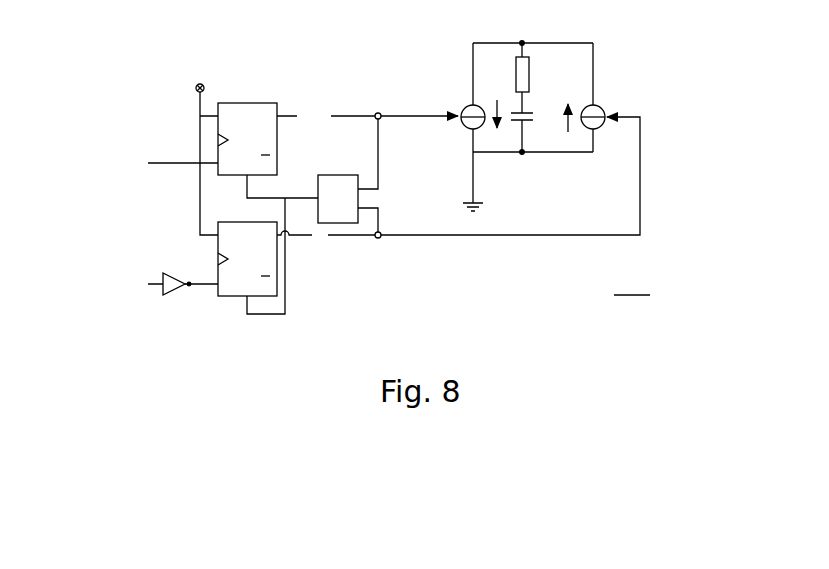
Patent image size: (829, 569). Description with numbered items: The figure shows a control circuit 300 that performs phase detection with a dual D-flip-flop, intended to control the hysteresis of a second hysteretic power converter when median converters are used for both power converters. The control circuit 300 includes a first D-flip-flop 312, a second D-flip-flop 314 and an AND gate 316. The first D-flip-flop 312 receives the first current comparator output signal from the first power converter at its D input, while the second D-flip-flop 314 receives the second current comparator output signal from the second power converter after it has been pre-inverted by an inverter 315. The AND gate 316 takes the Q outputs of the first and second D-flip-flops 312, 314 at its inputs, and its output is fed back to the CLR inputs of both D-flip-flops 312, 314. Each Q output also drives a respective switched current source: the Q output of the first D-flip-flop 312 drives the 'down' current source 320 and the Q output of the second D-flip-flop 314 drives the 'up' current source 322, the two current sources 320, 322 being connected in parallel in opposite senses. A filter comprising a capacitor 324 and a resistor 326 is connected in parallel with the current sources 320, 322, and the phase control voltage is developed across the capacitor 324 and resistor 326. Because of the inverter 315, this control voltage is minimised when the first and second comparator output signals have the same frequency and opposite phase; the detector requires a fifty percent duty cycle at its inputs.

The control circuit 300 is at (362, 166).
The first D-flip-flop 312 is at (260, 93).
The second D-flip-flop 314 is at (226, 302).
The inverter 315 is at (158, 301).
The AND gate 316 is at (357, 230).
The 'down' current source 320 is at (452, 96).
The 'up' current source 322 is at (619, 95).
The capacitor 324 is at (539, 126).
The resistor 326 is at (541, 63).